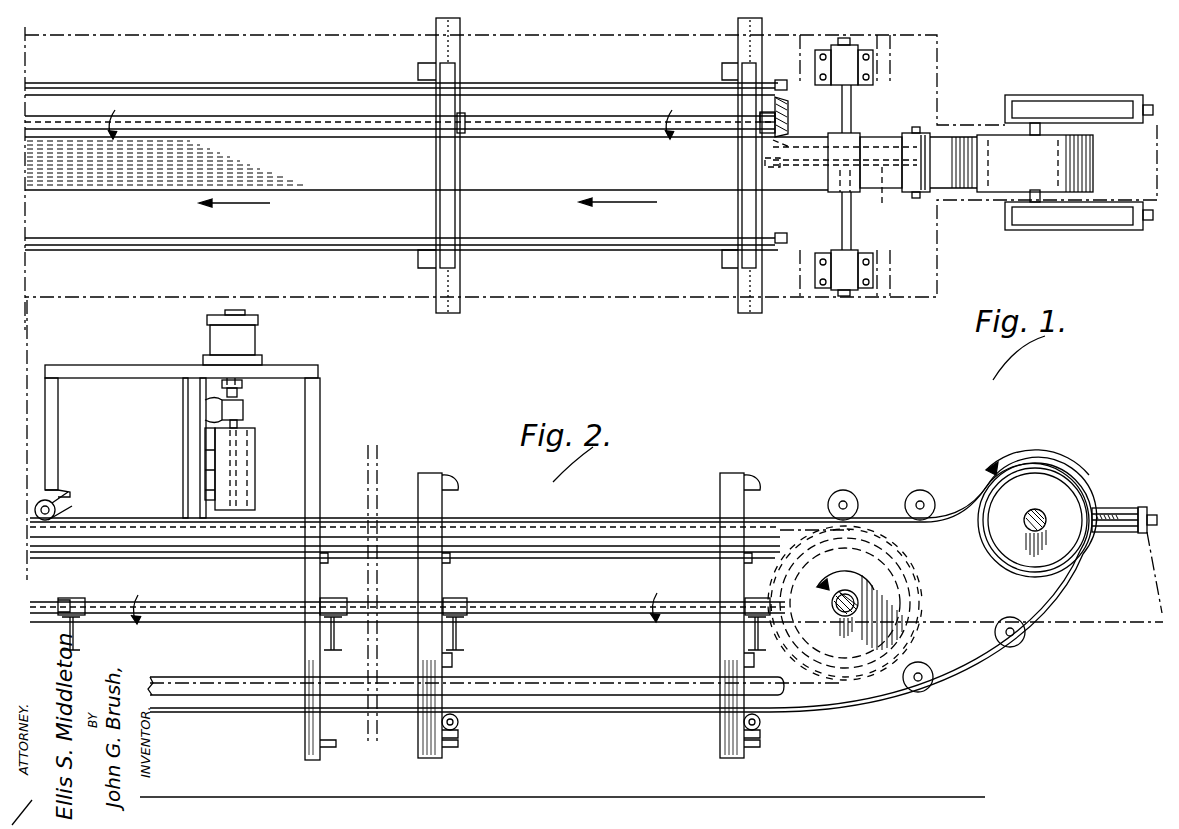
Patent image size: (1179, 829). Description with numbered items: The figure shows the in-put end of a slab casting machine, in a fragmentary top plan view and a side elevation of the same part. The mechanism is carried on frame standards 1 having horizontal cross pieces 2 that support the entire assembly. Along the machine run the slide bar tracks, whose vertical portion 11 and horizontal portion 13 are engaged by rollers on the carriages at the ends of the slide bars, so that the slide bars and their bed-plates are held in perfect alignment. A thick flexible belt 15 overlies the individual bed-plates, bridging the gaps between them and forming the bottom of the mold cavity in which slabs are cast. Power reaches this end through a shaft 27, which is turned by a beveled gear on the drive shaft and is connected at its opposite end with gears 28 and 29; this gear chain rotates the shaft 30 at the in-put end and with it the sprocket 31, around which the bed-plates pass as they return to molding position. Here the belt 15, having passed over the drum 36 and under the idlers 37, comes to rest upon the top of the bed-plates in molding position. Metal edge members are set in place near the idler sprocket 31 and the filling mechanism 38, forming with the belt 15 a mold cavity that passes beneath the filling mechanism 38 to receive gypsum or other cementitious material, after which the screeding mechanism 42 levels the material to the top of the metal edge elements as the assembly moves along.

In FIG. 1, the frame standards 1 is at (434, 74).
In FIG. 2, the frame standards 1 is at (440, 478).
In FIG. 1, the horizontal cross pieces 2 is at (453, 74).
In FIG. 2, the horizontal cross pieces 2 is at (456, 490).
In FIG. 1, the vertical portion of the slide bar track 11 is at (302, 86).
In FIG. 2, the vertical portion of the slide bar track 11 is at (523, 517).
In FIG. 1, the horizontal portion of the slide bar track 13 is at (318, 90).
In FIG. 1, the flexible belt 15 is at (426, 172).
In FIG. 2, the flexible belt 15 is at (613, 519).
In FIG. 1, the shaft 27 is at (178, 117).
In FIG. 2, the shaft 27 is at (200, 604).
In FIG. 1, the gear 28 is at (790, 113).
In FIG. 2, the gear 28 is at (786, 601).
In FIG. 1, the gear 29 is at (803, 141).
In FIG. 2, the gear 29 is at (861, 604).
In FIG. 1, the shaft 30 is at (840, 219).
In FIG. 2, the shaft 30 is at (842, 618).
In FIG. 1, the sprocket 31 is at (865, 179).
In FIG. 2, the sprocket 31 is at (915, 573).
In FIG. 1, the drum 36 is at (993, 193).
In FIG. 2, the drum 36 is at (1072, 503).
In FIG. 1, the idlers 37 is at (910, 133).
In FIG. 2, the idlers 37 is at (905, 500).
In FIG. 2, the filling mechanism 38 is at (252, 428).
In FIG. 2, the screeding mechanism 42 is at (55, 508).